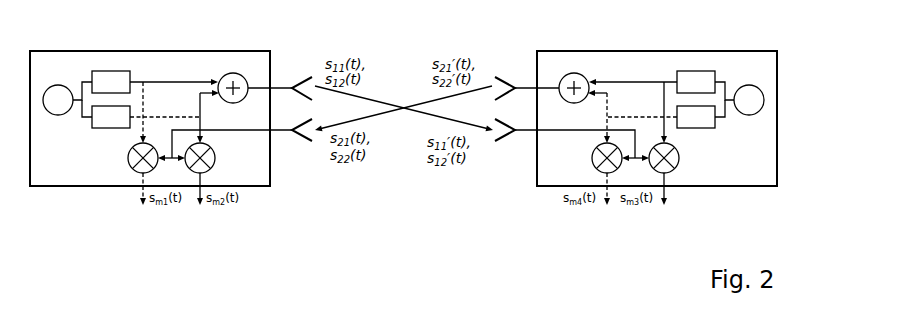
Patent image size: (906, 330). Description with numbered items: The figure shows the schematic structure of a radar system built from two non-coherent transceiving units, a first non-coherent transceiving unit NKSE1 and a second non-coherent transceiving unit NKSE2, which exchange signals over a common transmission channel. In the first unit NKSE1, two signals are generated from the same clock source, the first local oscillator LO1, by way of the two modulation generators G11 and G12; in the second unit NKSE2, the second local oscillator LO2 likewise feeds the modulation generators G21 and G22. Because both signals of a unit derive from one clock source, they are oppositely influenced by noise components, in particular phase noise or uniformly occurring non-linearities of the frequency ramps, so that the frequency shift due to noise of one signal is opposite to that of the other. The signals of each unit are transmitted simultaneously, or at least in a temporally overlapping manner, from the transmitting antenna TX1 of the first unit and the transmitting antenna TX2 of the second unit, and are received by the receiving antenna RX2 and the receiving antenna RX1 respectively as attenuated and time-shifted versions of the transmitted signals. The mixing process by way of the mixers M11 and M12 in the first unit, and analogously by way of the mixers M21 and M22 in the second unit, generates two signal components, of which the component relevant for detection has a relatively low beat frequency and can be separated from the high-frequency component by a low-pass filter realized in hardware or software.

The first non-coherent transceiving unit NKSE1 is at (150, 106).
The second non-coherent transceiving unit NKSE2 is at (657, 106).
The first local oscillator LO1 is at (67, 99).
The second local oscillator LO2 is at (739, 99).
The modulation generator G11 is at (155, 107).
The modulation generator G12 is at (155, 116).
The modulation generator G21 is at (652, 107).
The modulation generator G22 is at (651, 116).
The mixer M11 is at (127, 174).
The mixer M12 is at (217, 174).
The mixer M21 is at (680, 174).
The mixer M22 is at (589, 174).
The transmitting antenna TX1 is at (281, 79).
The receiving antenna RX1 is at (236, 141).
The transmitting antenna TX2 is at (525, 79).
The receiving antenna RX2 is at (569, 142).